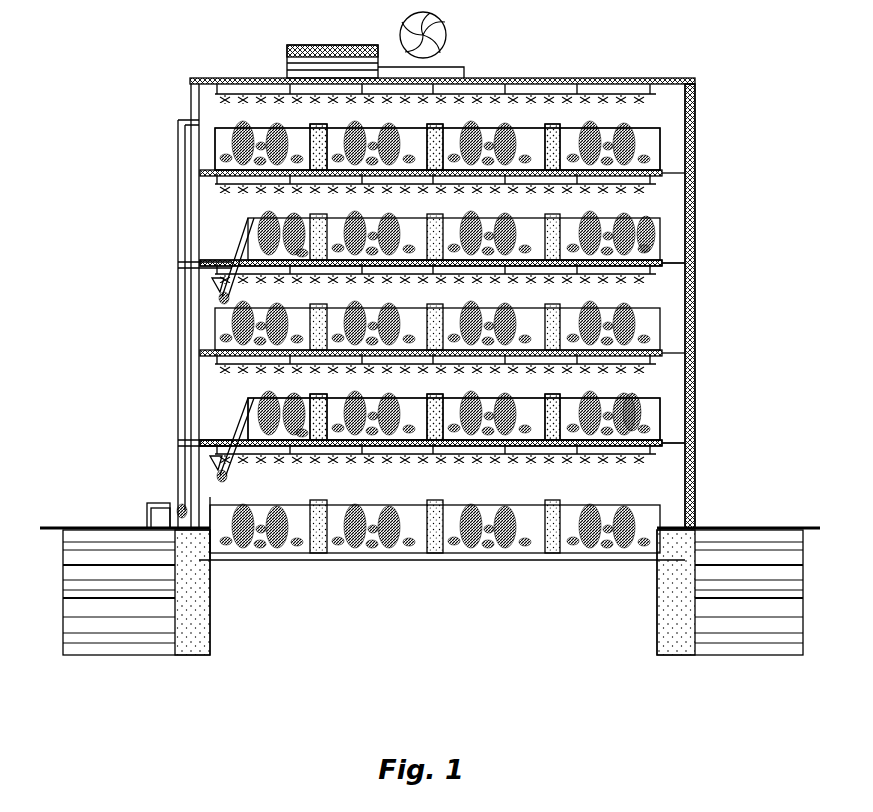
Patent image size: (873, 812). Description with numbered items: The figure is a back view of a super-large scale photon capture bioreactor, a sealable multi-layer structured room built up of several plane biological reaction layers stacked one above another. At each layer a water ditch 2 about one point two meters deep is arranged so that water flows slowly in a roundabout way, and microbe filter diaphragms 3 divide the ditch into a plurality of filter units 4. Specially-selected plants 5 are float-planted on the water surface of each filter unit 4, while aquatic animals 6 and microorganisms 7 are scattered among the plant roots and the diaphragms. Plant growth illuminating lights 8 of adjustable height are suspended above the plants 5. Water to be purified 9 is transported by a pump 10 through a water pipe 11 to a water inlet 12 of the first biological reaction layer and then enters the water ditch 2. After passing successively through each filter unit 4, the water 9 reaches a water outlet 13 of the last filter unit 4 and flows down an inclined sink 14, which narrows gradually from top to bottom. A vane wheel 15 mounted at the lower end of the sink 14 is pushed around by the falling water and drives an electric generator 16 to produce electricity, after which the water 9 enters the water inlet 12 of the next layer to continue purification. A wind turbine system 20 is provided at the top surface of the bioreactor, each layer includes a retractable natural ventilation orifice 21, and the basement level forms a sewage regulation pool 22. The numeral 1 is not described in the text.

The support frame 1 is at (693, 445).
The water ditch 2 is at (658, 427).
The microbe filter diaphragm 3 is at (640, 408).
The filter unit 4 is at (225, 160).
The specially-selected plants 5 is at (638, 385).
The aquatic animals 6 is at (650, 250).
The microorganisms 7 is at (645, 232).
The plant growth illuminating light 8 is at (640, 280).
The water to be purified 9 is at (657, 227).
The pump 10 is at (160, 505).
The water pipe 11 is at (180, 506).
The water inlet 12 is at (225, 116).
The water outlet 13 is at (262, 213).
The inclined sink 14 is at (235, 262).
The vane wheel 15 is at (222, 296).
The electric generator 16 is at (212, 284).
The wind turbine system 20 is at (285, 66).
The retractable natural ventilation orifice 21 is at (657, 210).
The sewage regulation pool 22 is at (100, 557).